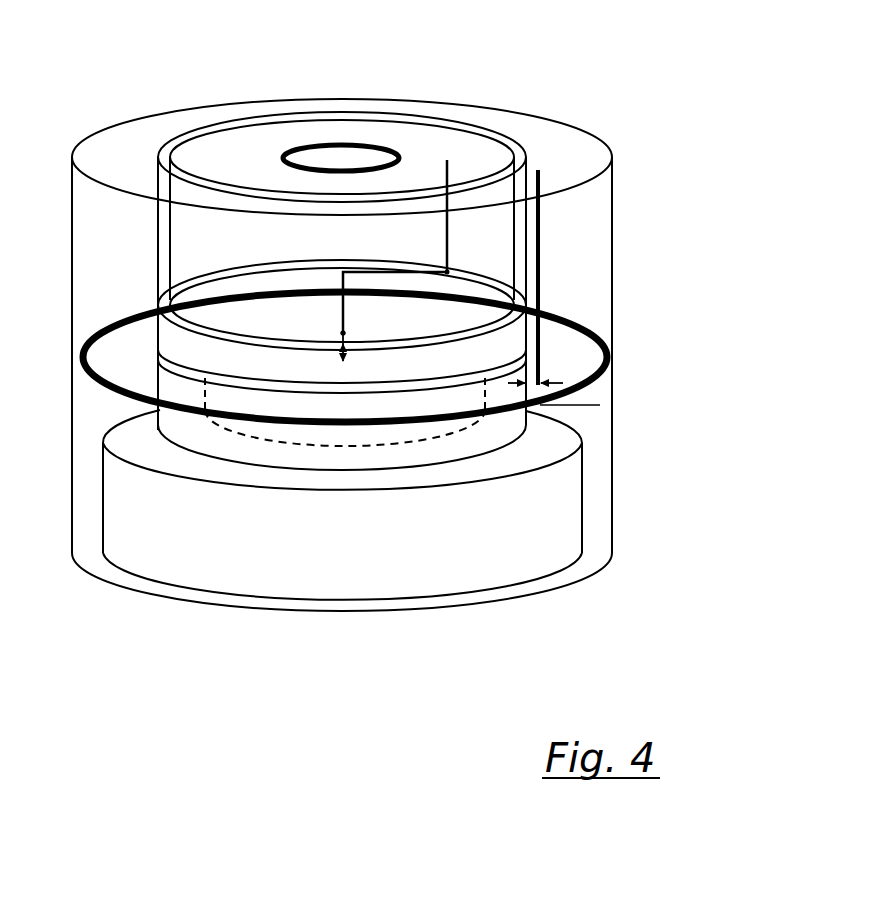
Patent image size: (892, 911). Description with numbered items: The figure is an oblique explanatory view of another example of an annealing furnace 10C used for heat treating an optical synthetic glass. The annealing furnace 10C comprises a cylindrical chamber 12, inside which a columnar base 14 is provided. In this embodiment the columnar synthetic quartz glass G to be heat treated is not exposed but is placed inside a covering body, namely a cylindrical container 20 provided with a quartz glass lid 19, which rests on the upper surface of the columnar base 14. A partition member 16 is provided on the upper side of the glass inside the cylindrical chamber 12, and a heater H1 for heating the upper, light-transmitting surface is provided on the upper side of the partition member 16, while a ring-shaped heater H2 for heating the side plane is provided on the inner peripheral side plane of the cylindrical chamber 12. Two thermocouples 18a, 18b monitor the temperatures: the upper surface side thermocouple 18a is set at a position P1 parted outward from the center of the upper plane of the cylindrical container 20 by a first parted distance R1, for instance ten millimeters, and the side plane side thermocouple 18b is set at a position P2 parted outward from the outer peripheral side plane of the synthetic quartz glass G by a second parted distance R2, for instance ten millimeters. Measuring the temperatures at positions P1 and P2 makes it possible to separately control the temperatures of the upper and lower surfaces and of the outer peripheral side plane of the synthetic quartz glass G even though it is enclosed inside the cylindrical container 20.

The annealing furnace 10C is at (660, 158).
The cylindrical chamber 12 is at (587, 262).
The columnar base 14 is at (407, 570).
The partition member 16 is at (228, 150).
The upper surface side thermocouple 18a is at (450, 158).
The side plane side thermocouple 18b is at (540, 180).
The quartz glass lid 19 is at (252, 362).
The cylindrical container 20 is at (490, 447).
The columnar synthetic quartz glass G is at (338, 413).
The heater for heating the upper surface H1 is at (397, 147).
The ring-shaped heater for heating the side plane H2 is at (605, 333).
The position P1 is at (347, 332).
The position P2 is at (613, 378).
The first parted distance R1 is at (350, 360).
The second parted distance R2 is at (600, 405).